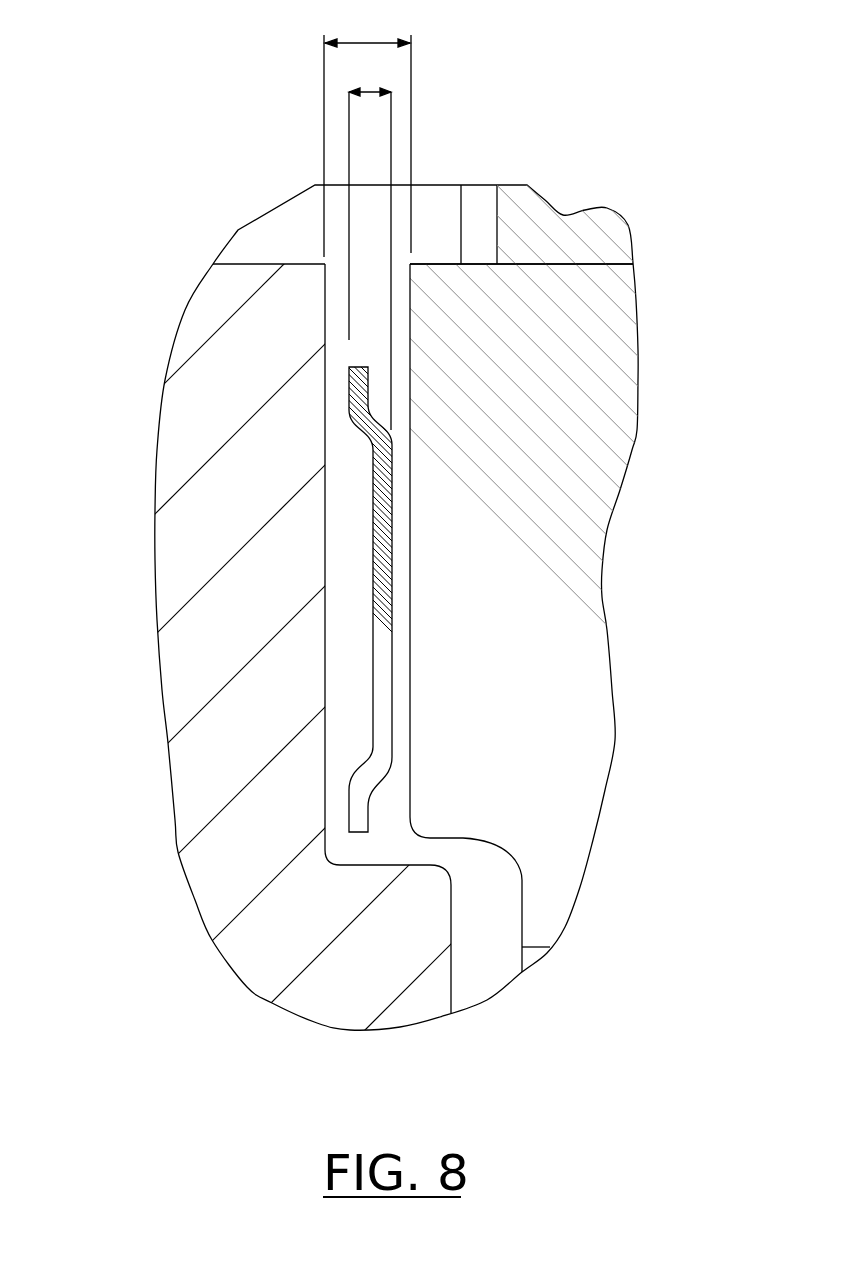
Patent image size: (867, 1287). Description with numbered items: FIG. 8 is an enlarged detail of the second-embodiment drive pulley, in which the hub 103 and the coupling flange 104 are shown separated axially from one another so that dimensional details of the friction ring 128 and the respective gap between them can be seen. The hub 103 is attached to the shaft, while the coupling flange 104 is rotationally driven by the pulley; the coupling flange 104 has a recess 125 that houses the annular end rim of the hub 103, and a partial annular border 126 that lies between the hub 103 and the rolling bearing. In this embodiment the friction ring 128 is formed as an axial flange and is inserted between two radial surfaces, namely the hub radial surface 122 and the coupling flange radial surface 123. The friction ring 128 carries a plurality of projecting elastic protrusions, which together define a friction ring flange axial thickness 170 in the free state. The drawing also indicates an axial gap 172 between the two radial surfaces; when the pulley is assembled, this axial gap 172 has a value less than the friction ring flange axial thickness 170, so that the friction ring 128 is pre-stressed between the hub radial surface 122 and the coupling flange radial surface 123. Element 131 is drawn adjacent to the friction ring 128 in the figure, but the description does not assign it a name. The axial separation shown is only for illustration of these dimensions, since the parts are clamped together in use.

The hub 103 is at (258, 322).
The coupling flange 104 is at (620, 496).
The hub radial surface 122 is at (325, 573).
The coupling flange radial surface 123 is at (410, 792).
The recess 125 is at (392, 310).
The partial annular border 126 is at (545, 913).
The friction ring 128 is at (437, 604).
The sealing element 131 is at (393, 398).
The friction ring flange axial thickness 170 is at (372, 92).
The axial gap 172 is at (372, 43).